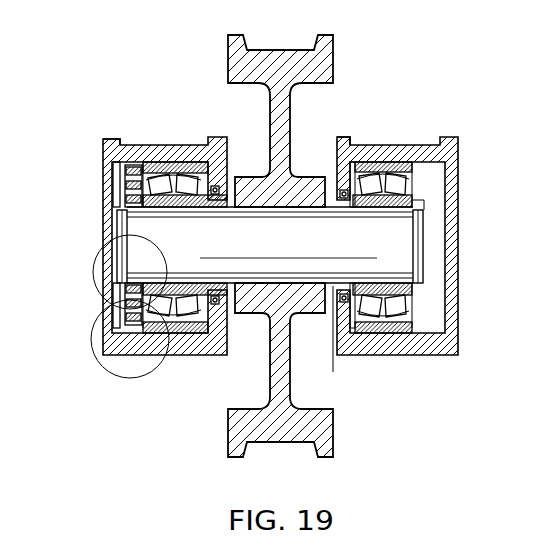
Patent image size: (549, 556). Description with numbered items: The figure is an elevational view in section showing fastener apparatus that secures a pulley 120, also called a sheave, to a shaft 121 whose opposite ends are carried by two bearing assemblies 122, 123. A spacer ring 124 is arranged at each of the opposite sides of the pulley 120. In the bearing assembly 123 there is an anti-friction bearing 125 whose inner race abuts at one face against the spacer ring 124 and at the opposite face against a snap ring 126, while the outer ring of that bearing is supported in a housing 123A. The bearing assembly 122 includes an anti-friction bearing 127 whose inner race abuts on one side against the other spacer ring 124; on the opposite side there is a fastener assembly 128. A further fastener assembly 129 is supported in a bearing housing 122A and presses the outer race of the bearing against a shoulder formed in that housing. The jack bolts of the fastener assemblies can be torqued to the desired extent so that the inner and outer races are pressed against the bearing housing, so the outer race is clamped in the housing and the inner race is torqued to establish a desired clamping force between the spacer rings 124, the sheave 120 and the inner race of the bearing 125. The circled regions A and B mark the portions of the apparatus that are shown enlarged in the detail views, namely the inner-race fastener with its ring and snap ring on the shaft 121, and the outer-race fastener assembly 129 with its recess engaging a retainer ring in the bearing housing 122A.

The pulley 120 is at (334, 68).
The shaft 121 is at (315, 249).
The bearing assembly 122 is at (173, 137).
The bearing housing 122A is at (140, 140).
The bearing assembly 123 is at (416, 137).
The housing 123A is at (363, 137).
The spacer ring 124 is at (221, 201).
The anti-friction bearing 125 is at (424, 170).
The snap ring 126 is at (425, 205).
The anti-friction bearing 127 is at (176, 204).
The fastener assembly 128 is at (123, 206).
The fastener assembly 129 is at (123, 170).
The Detail 19A A is at (96, 274).
The Detail 19B B is at (97, 352).